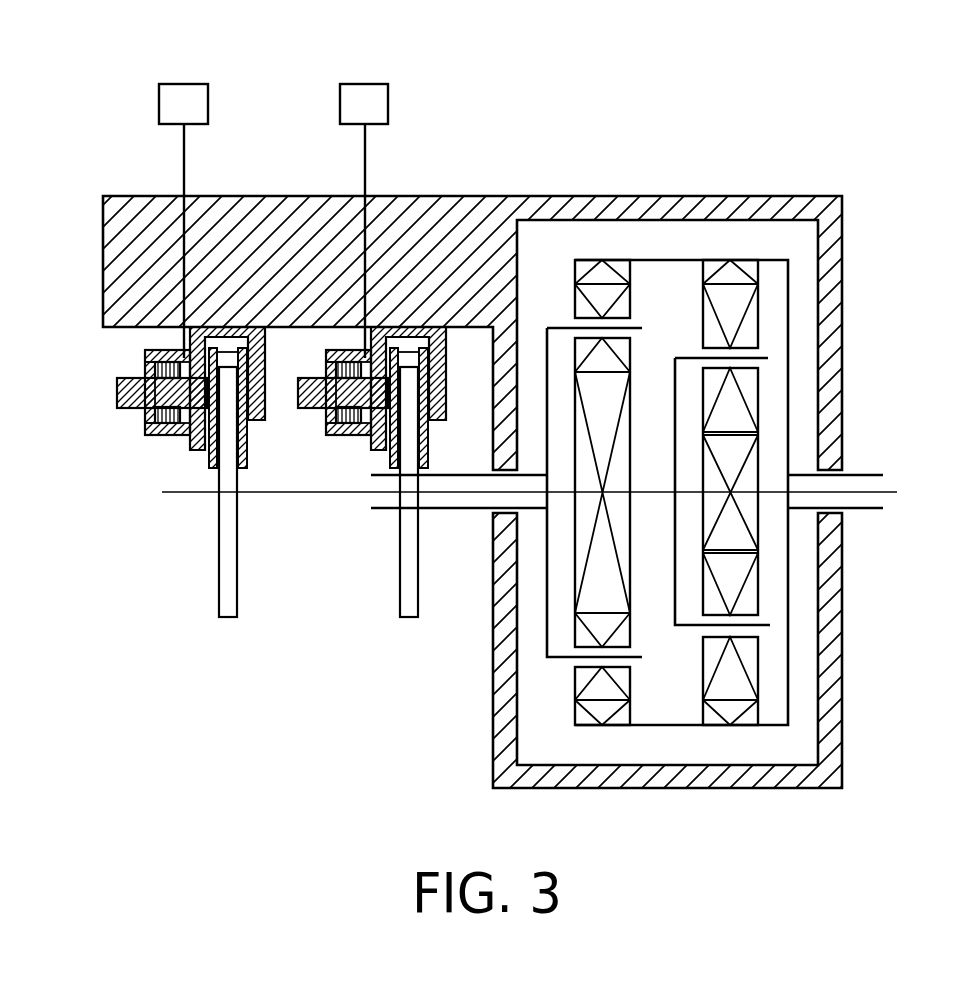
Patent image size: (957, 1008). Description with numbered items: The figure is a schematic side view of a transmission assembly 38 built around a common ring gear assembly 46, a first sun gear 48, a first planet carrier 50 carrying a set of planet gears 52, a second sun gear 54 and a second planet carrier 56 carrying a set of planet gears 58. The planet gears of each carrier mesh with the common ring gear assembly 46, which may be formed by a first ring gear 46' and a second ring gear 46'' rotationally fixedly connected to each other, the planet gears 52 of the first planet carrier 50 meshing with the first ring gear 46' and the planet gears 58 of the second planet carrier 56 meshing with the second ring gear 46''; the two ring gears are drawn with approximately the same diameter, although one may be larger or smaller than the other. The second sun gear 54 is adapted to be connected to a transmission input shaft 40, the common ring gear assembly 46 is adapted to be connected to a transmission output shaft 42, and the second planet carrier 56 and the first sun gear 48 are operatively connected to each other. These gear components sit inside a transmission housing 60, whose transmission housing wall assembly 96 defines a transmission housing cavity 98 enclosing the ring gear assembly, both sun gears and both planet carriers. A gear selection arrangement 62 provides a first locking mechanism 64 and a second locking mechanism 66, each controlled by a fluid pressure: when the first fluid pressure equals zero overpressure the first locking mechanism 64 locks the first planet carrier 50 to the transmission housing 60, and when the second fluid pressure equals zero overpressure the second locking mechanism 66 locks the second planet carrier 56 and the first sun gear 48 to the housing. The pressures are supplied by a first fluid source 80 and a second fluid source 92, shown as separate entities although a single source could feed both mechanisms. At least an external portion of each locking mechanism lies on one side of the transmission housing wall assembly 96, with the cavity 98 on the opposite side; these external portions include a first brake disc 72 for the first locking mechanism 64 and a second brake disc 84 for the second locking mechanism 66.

The transmission assembly 38 is at (275, 723).
The transmission input shaft 40 is at (893, 492).
The transmission output shaft 42 is at (853, 508).
The common ring gear assembly 46 is at (681, 434).
The first ring gear 46' is at (619, 434).
The second ring gear 46'' is at (761, 434).
The first sun gear 48 is at (547, 540).
The first planet carrier 50 is at (630, 322).
The set of planet gears 52 is at (630, 302).
The second sun gear 54 is at (758, 455).
The second planet carrier 56 is at (768, 358).
The set of planet gears 58 is at (758, 393).
The transmission housing 60 is at (261, 196).
The gear selection arrangement 62 is at (138, 532).
The first locking mechanism 64 is at (453, 330).
The second locking mechanism 66 is at (278, 330).
The first brake disc 72 is at (399, 568).
The first fluid source 80 is at (369, 84).
The second brake disc 84 is at (219, 568).
The second fluid source 92 is at (187, 84).
The transmission housing wall assembly 96 is at (707, 788).
The transmission housing cavity 98 is at (570, 737).